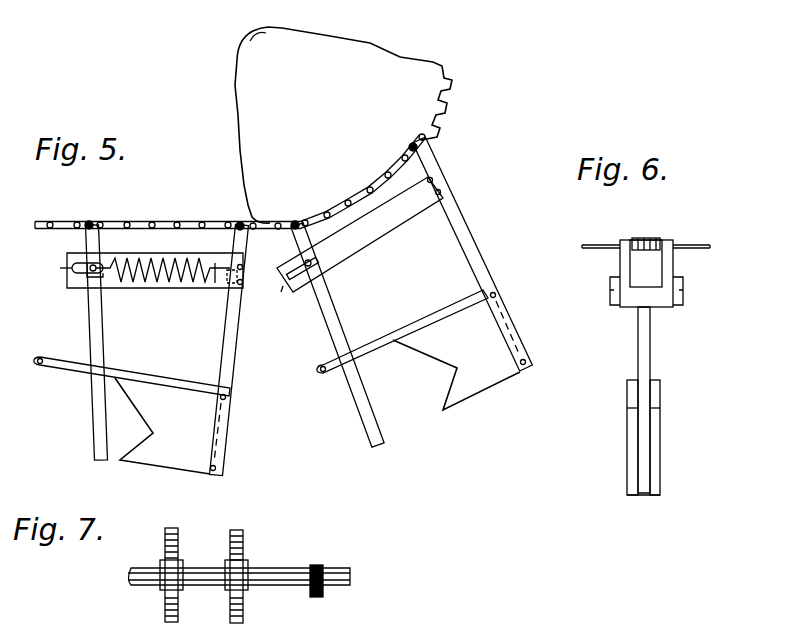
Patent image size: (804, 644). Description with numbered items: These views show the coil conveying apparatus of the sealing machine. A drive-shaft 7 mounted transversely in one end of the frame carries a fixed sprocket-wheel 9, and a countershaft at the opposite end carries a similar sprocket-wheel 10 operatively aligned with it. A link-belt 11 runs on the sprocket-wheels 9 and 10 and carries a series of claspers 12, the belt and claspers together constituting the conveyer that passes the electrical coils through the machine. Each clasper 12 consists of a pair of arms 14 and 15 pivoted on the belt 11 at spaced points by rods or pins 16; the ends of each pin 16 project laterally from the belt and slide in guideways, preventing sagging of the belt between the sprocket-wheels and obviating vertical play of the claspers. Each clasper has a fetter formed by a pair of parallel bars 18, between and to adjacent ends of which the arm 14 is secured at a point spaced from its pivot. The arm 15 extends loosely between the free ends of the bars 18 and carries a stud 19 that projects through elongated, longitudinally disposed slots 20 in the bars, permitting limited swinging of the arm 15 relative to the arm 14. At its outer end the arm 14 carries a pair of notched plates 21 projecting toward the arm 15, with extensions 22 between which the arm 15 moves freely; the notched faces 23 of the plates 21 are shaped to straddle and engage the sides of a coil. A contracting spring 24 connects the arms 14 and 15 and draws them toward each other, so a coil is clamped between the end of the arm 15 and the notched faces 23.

In FIG. 5, the drive-shaft 7 is at (252, 40).
In FIG. 7, the drive-shaft 7 is at (287, 568).
In FIG. 5, the sprocket-wheel 9 is at (343, 125).
In FIG. 7, the sprocket-wheel 9 is at (179, 540).
In FIG. 7, the sprocket-wheel 10 is at (244, 533).
In FIG. 5, the link-belt 11 is at (167, 220).
In FIG. 6, the link-belt 11 is at (646, 242).
In FIG. 7, the link-belt 11 is at (320, 566).
In FIG. 5, the clasper 12 is at (233, 346).
In FIG. 6, the clasper 12 is at (651, 347).
In FIG. 5, the arm 14 is at (236, 385).
In FIG. 6, the arm 14 is at (638, 330).
In FIG. 5, the arm 15 is at (94, 420).
In FIG. 5, the rod or pin 16 is at (89, 222).
In FIG. 6, the rod or pin 16 is at (603, 244).
In FIG. 5, the parallel bars 18 is at (125, 289).
In FIG. 6, the parallel bars 18 is at (610, 292).
In FIG. 5, the stud 19 is at (88, 277).
In FIG. 5, the slot 20 is at (72, 267).
In FIG. 5, the notched plate 21 is at (317, 398).
In FIG. 6, the notched plate 21 is at (627, 438).
In FIG. 5, the extension 22 is at (55, 357).
In FIG. 5, the notched face 23 is at (452, 385).
In FIG. 5, the contracting spring 24 is at (175, 283).